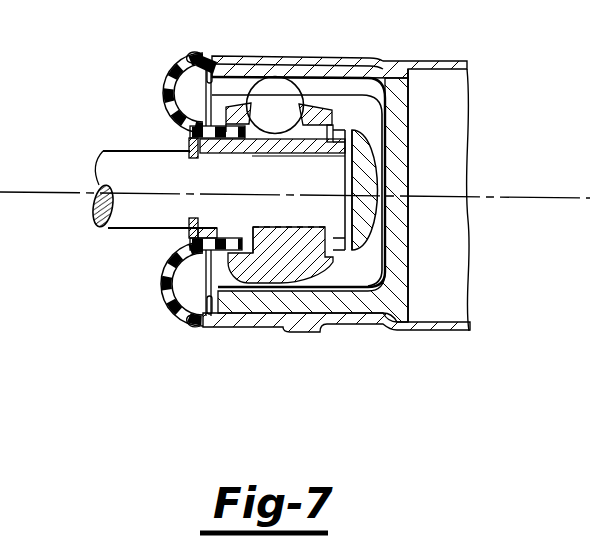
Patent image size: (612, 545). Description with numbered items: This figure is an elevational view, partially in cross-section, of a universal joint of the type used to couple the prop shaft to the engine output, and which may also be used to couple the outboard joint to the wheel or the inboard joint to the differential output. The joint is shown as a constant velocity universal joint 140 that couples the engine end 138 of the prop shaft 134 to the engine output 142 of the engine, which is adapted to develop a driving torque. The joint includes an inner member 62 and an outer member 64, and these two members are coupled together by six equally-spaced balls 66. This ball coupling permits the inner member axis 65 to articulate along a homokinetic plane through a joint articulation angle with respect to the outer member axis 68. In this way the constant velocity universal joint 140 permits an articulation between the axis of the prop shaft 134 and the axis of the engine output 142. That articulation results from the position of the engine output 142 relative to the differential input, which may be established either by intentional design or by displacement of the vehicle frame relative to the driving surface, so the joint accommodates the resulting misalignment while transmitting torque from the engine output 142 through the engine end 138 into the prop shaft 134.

The inner member 62 is at (229, 287).
The outer member 64 is at (321, 70).
The inner member axis 65 is at (104, 229).
The balls 66 is at (271, 67).
The outer member axis 68 is at (515, 197).
The prop shaft 134 is at (180, 223).
The engine end 138 is at (131, 231).
The constant velocity universal joint 140 is at (343, 208).
The engine output 142 is at (442, 60).